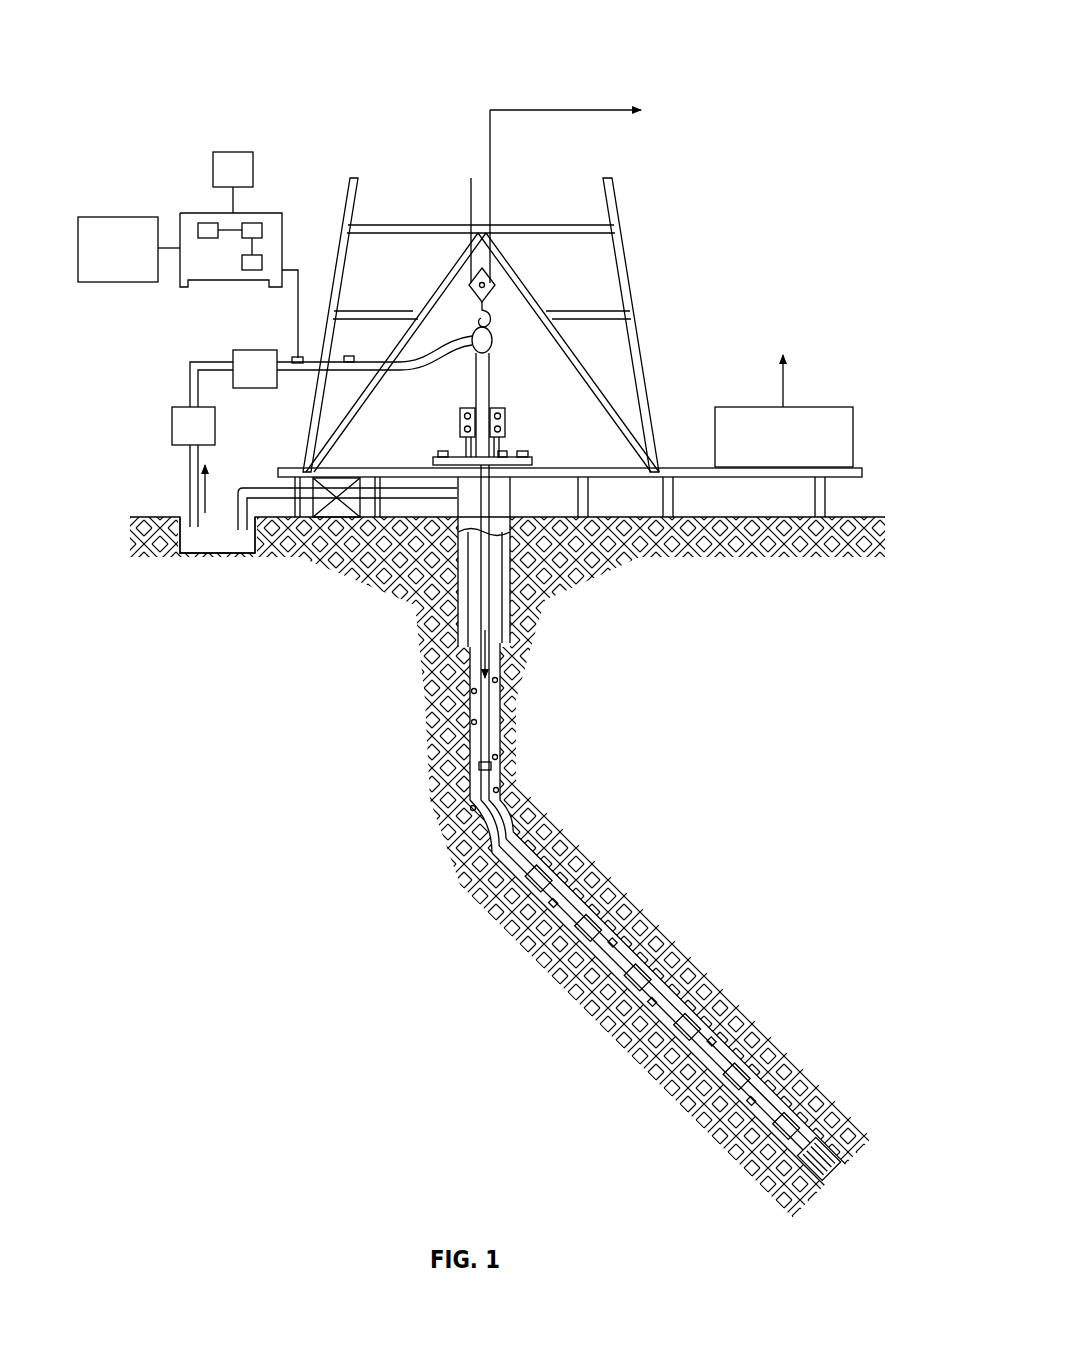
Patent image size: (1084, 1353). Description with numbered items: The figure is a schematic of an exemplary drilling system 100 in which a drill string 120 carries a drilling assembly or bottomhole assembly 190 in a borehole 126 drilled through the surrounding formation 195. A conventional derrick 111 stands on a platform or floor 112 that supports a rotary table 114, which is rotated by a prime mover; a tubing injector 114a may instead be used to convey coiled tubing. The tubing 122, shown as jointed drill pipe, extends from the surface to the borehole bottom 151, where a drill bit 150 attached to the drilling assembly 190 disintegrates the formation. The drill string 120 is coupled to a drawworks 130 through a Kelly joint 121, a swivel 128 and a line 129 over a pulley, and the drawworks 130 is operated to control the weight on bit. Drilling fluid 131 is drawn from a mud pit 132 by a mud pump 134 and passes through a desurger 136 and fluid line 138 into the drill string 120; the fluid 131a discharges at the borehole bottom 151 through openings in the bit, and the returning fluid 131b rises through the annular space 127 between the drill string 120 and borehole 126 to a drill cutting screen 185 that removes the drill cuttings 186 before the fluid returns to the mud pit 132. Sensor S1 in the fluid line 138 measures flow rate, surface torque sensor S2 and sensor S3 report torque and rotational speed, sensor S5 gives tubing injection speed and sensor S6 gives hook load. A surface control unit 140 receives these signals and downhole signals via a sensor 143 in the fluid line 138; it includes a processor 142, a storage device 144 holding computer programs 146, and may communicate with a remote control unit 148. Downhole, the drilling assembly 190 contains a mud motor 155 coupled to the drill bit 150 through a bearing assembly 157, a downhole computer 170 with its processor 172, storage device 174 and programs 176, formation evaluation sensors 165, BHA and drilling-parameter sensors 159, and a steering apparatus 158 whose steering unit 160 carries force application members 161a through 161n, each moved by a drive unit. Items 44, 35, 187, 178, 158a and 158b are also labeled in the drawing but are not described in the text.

The drilling system 100 is at (218, 68).
The controller 44 is at (113, 217).
The surface control unit 140 is at (215, 213).
The processor 142 is at (233, 152).
The storage device 144 is at (253, 223).
The computer programs 146 is at (252, 270).
The remote control unit 148 is at (134, 266).
The sensor 143 is at (297, 357).
The desurger 136 is at (233, 355).
The fluid line 138 is at (308, 373).
The mud pump 134 is at (172, 413).
The drilling fluid 131 is at (185, 523).
The mud pit 132 is at (207, 555).
The return line 35 is at (430, 497).
The drill cutting screen 185 is at (330, 472).
The swivel 128 is at (460, 355).
The line 129 is at (493, 195).
The derrick 111 is at (635, 325).
The floor 112 is at (660, 468).
The drawworks 130 is at (823, 407).
The Kelly joint 121 is at (489, 395).
The tubing injector 114a is at (505, 420).
The rotary table 114 is at (510, 473).
The sensor S1 is at (350, 354).
The surface torque sensor S2 is at (523, 452).
The sensor S3 is at (445, 452).
The sensor S5 is at (489, 362).
The sensor S6 is at (477, 327).
The casing 187 is at (507, 633).
The drill cuttings 186 is at (513, 675).
The drilling fluid 131a is at (477, 657).
The tubing 122 is at (470, 702).
The drill string 120 is at (497, 733).
The borehole 126 is at (512, 822).
The annular space 127 is at (527, 838).
The returning drilling fluid 131b is at (470, 826).
The drill pipe 178 is at (487, 880).
The mud motor 155 is at (587, 917).
The downhole computer 170 is at (453, 952).
The processor 172 is at (553, 902).
The storage device 174 is at (612, 942).
The computer programs 176 is at (652, 1001).
The bottomhole assembly 190 is at (706, 900).
The formation 195 is at (842, 966).
The formation evaluation sensors 165 is at (660, 1067).
The force application member 161a is at (793, 1097).
The force application member 161n is at (786, 1126).
The bearing assembly 157 is at (800, 1097).
The steering apparatus 158 is at (813, 1107).
The drill bit 150 is at (829, 1130).
The steering unit 160 is at (773, 1123).
The stator 158a is at (793, 1137).
The rotor 158b is at (787, 1127).
The sensors and devices 159 is at (800, 1140).
The borehole bottom 151 is at (807, 1183).